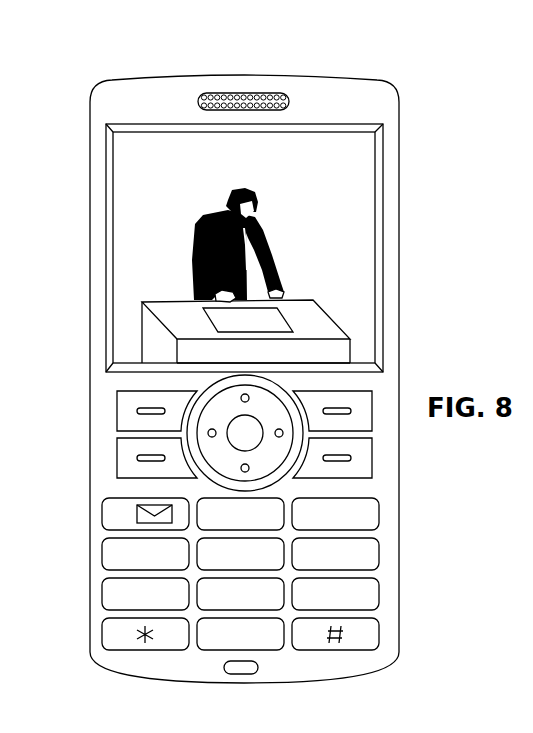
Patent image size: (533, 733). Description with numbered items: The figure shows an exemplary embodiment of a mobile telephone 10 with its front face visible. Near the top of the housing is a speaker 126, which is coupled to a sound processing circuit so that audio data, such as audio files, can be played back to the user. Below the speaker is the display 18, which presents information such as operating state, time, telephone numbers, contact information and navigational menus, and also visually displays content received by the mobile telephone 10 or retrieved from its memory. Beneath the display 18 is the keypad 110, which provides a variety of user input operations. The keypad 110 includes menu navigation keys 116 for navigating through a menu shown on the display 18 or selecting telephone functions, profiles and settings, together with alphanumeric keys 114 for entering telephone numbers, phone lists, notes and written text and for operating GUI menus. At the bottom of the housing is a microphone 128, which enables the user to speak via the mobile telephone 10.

The mobile telephone 10 is at (100, 70).
The display 18 is at (128, 237).
The keypad 110 is at (299, 574).
The alphanumeric keys 114 is at (380, 513).
The menu navigation keys 116 is at (263, 469).
The speaker 126 is at (247, 93).
The microphone 128 is at (248, 669).